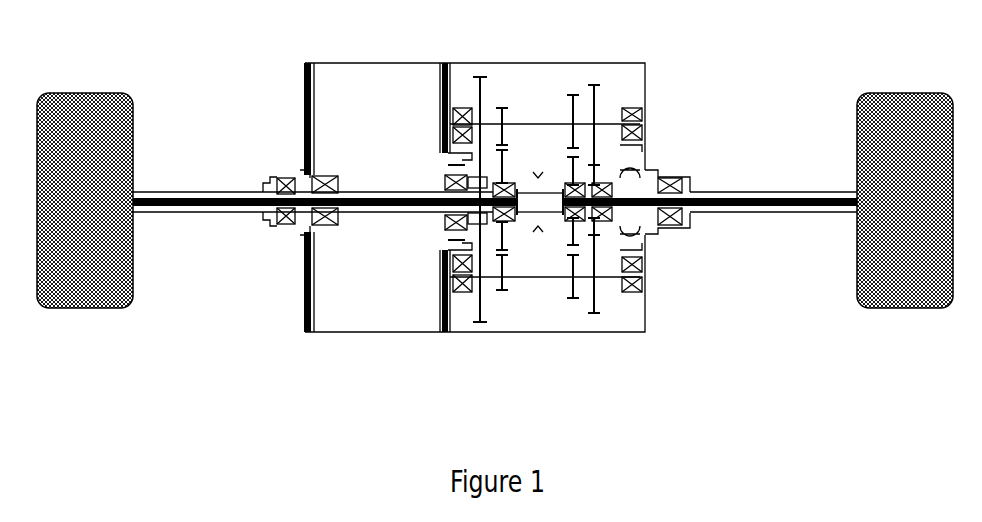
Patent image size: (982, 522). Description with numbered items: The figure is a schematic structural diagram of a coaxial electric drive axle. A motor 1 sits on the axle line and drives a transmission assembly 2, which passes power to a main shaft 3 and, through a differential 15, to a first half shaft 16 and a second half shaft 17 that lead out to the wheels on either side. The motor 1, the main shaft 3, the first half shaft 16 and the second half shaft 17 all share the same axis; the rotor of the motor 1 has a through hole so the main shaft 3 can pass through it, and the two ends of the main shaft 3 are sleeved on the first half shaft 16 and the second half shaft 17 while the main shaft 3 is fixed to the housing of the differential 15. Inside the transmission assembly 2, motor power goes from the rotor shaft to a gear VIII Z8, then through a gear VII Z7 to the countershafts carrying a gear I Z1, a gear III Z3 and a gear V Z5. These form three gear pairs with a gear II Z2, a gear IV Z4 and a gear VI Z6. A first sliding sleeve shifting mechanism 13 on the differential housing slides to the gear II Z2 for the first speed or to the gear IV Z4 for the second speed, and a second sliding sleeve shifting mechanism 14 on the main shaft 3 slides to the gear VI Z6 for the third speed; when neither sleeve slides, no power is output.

The motor 1 is at (307, 177).
The transmission assembly 2 is at (506, 76).
The main shaft 3 is at (394, 212).
The first sliding sleeve shifting mechanism 13 is at (537, 175).
The second sliding sleeve shifting mechanism 14 is at (630, 168).
The differential 15 is at (672, 231).
The first half shaft 16 is at (163, 190).
The second half shaft 17 is at (787, 188).
The gear I Z1 is at (515, 204).
The gear II Z2 is at (513, 203).
The gear III Z3 is at (563, 198).
The gear IV Z4 is at (563, 206).
The gear V Z5 is at (605, 199).
The gear VI Z6 is at (604, 203).
The gear VII Z7 is at (488, 199).
The gear VIII Z8 is at (467, 177).